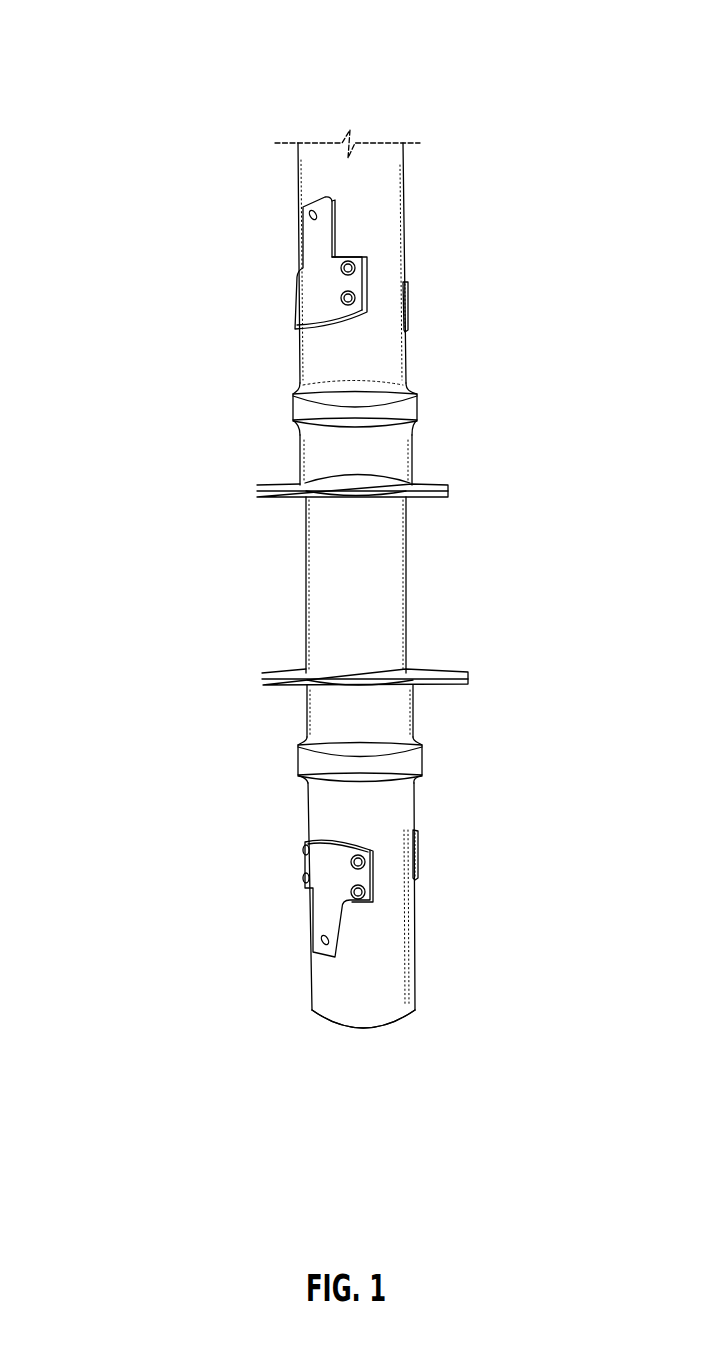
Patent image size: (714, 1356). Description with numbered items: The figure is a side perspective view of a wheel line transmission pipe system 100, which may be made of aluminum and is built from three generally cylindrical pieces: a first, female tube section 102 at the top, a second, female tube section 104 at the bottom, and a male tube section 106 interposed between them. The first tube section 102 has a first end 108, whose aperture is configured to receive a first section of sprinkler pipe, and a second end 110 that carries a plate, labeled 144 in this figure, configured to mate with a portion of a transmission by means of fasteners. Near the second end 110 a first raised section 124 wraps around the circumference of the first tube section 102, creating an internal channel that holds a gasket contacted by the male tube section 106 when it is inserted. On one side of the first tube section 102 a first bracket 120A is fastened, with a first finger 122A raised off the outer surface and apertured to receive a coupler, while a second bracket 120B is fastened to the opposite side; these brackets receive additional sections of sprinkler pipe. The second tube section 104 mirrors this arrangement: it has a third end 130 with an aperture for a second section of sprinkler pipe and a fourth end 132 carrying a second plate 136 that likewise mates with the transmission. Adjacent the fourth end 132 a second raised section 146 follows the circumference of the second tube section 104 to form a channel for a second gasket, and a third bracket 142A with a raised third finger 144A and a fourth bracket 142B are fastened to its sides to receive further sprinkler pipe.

The wheel line transmission pipe system 100 is at (122, 42).
The first tube section 102 is at (393, 237).
The second tube section 104 is at (402, 995).
The male tube section 106 is at (400, 585).
The first end 108 is at (385, 155).
The second end 110 is at (419, 467).
The first bracket 120A is at (276, 250).
The second bracket 120B is at (409, 303).
The first finger 122A is at (306, 221).
The first raised section 124 is at (308, 400).
The third end 130 is at (307, 1009).
The fourth end 132 is at (296, 712).
The second plate 136 is at (430, 671).
The third bracket 142A is at (285, 891).
The fourth bracket 142B is at (414, 852).
The upper flange 144 is at (255, 492).
The third finger 144A is at (322, 940).
The second raised section 146 is at (308, 761).